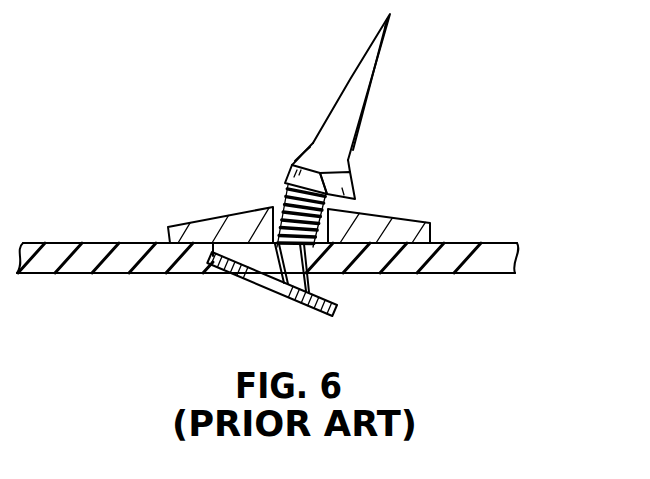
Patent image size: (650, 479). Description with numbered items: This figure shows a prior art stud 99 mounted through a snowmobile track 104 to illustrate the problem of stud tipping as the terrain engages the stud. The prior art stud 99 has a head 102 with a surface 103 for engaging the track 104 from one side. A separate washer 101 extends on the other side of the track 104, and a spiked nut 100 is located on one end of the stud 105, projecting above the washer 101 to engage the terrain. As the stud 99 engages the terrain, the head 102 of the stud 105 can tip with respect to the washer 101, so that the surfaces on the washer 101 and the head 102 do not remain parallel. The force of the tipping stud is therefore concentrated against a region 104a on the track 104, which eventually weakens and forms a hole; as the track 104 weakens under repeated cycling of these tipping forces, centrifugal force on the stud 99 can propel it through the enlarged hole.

The prior art stud 99 is at (380, 79).
The spiked nut 100 is at (353, 150).
The washer 101 is at (384, 213).
The head 102 is at (295, 303).
The surface 103 is at (332, 304).
The track 104 is at (488, 242).
The region 104a is at (212, 256).
The stud 105 is at (290, 201).